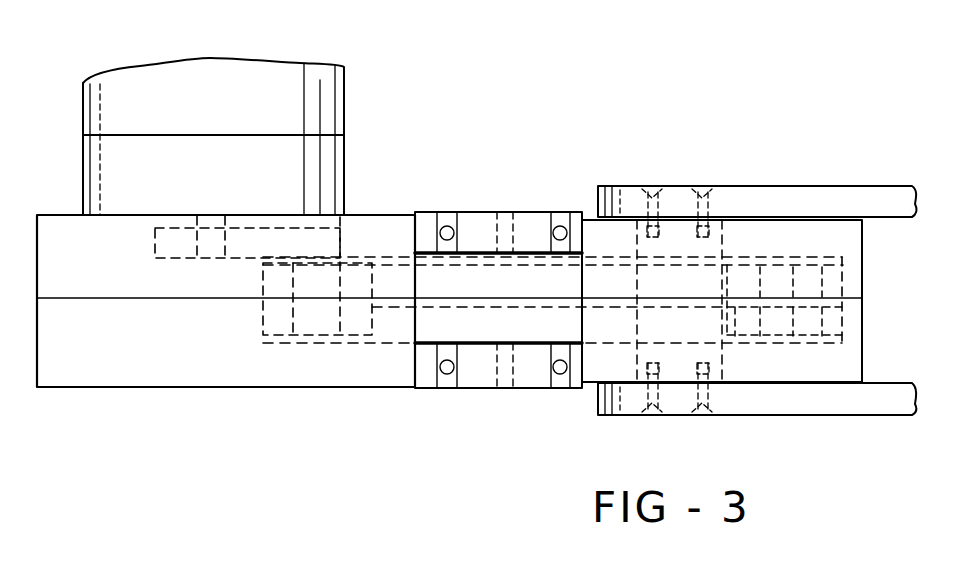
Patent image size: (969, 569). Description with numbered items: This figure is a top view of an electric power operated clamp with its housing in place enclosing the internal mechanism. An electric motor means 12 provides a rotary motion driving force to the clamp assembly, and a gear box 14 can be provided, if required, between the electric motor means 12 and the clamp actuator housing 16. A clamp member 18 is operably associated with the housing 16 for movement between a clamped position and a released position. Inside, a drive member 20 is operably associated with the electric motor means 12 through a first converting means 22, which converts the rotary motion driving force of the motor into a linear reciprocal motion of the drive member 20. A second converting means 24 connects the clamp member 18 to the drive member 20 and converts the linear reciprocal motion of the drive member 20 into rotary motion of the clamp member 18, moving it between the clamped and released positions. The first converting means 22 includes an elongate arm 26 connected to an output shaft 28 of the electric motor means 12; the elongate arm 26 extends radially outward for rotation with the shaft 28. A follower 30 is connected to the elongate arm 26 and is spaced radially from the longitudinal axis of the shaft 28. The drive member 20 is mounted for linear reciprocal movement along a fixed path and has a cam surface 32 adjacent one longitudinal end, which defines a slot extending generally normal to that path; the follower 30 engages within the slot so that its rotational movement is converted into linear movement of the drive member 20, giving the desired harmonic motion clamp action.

The electric motor means 12 is at (111, 106).
The gear box 14 is at (105, 163).
The clamp actuator housing 16 is at (72, 372).
The clamp member 18 is at (853, 201).
The drive member 20 is at (478, 295).
The first converting means 22 is at (347, 253).
The second converting means 24 is at (814, 320).
The elongate arm 26 is at (250, 240).
The output shaft 28 is at (210, 250).
The follower 30 is at (316, 327).
The cam surface 32 is at (302, 327).